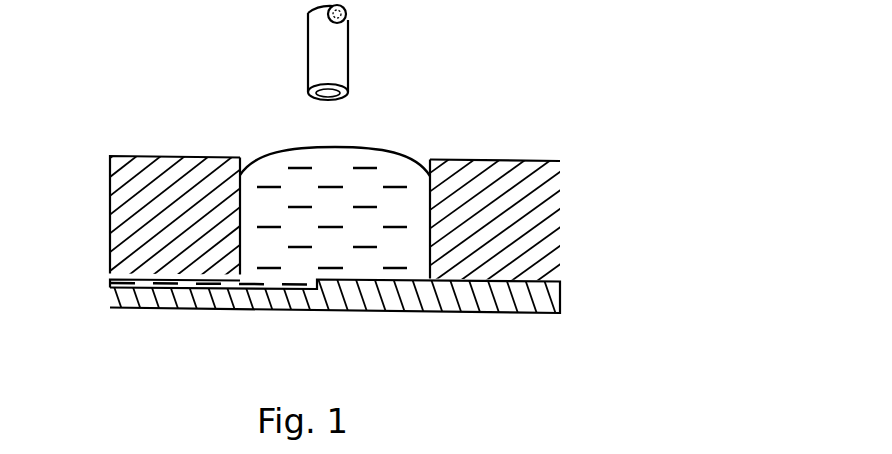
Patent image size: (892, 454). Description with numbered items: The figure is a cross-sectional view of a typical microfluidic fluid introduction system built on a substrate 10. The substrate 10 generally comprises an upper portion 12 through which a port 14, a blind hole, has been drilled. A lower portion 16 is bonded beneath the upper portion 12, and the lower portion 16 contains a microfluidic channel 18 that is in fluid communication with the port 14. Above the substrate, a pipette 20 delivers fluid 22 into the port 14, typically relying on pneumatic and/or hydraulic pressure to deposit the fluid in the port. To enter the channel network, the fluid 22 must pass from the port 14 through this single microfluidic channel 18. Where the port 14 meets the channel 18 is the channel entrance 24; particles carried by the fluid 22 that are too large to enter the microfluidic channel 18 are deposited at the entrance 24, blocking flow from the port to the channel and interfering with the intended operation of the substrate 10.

The substrate 10 is at (333, 198).
The upper portion 12 is at (340, 184).
The port 14 is at (366, 197).
The lower portion 16 is at (333, 315).
The microfluidic channel 18 is at (175, 319).
The pipette 20 is at (300, 52).
The fluid 22 is at (335, 190).
The channel entrance 24 is at (222, 320).